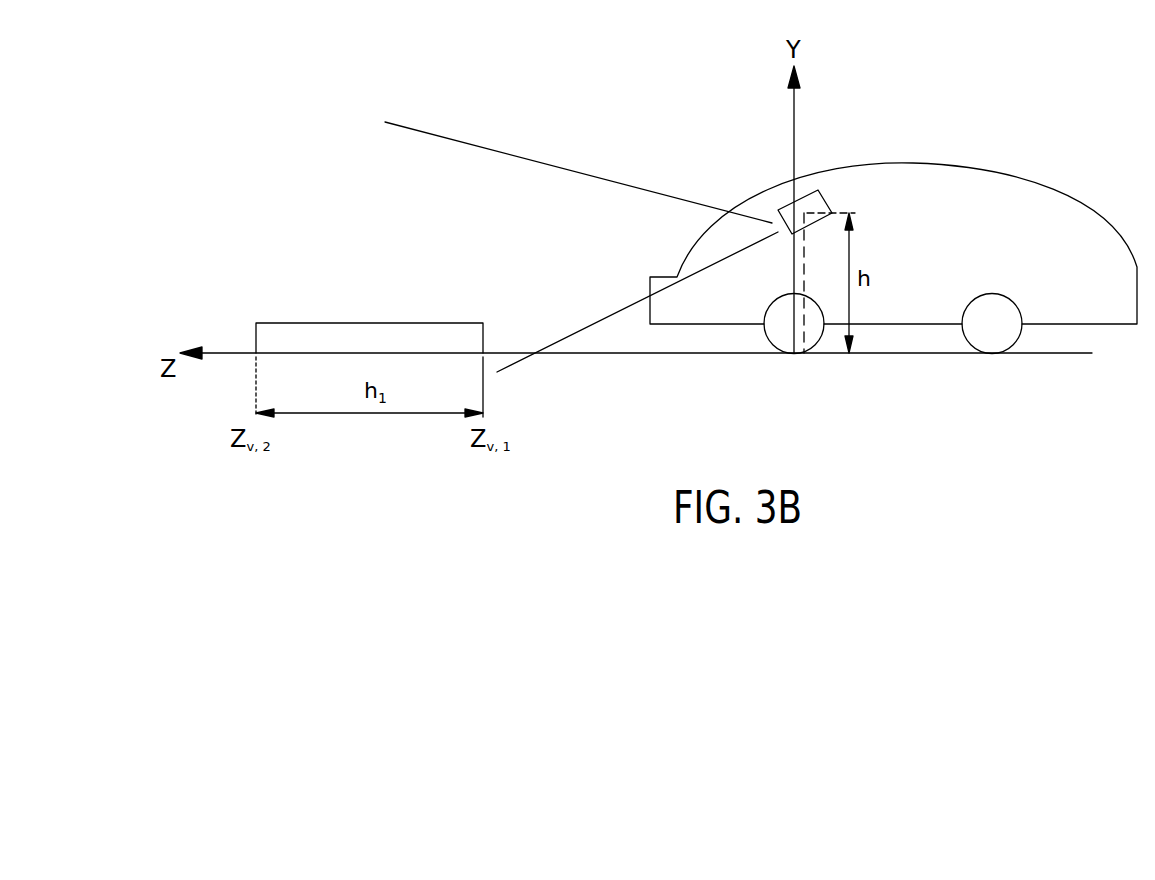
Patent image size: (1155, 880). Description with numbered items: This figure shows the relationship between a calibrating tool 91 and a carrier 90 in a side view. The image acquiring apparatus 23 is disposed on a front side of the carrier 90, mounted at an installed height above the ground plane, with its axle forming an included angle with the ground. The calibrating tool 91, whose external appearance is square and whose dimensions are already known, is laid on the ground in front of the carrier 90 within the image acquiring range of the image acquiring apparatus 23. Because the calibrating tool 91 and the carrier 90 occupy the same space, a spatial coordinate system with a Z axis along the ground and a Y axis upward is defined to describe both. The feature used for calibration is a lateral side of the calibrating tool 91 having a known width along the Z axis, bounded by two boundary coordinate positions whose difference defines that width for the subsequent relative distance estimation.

The image acquiring apparatus 23 is at (807, 205).
The carrier 90 is at (926, 222).
The calibrating tool 91 is at (330, 335).